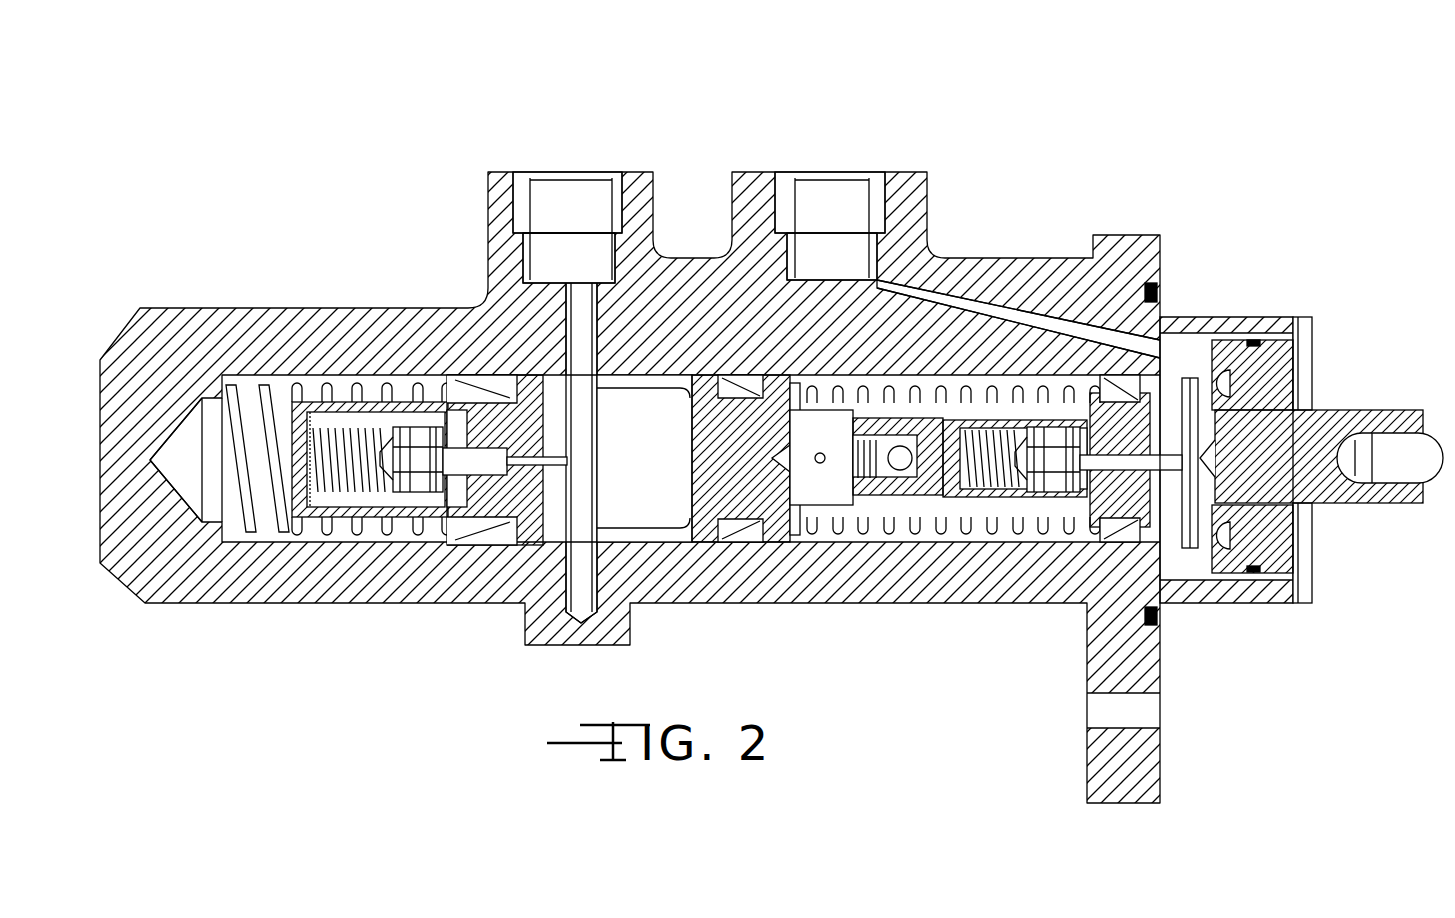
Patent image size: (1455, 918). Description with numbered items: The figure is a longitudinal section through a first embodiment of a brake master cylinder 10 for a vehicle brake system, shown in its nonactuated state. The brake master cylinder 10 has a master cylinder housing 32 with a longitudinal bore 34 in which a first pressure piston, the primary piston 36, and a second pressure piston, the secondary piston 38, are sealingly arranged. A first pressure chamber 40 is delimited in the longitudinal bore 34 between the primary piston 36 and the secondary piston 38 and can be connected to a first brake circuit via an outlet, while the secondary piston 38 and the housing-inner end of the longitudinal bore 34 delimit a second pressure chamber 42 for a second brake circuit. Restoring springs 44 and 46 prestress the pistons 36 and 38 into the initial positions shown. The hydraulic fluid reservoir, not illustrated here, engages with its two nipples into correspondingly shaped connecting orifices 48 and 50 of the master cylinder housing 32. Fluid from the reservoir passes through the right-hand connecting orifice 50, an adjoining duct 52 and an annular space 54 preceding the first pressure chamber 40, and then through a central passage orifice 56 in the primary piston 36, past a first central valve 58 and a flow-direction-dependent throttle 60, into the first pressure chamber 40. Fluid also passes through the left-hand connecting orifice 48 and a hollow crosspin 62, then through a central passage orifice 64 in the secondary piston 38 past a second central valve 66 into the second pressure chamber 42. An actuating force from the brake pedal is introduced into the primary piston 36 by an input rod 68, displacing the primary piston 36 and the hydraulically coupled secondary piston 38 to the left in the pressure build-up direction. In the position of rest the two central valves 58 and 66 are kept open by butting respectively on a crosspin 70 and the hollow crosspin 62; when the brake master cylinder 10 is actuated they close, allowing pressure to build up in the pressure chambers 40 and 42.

The brake master cylinder 10 is at (1052, 112).
The master cylinder housing 32 is at (690, 285).
The longitudinal bore 34 is at (178, 482).
The primary piston 36 is at (1113, 498).
The secondary piston 38 is at (707, 518).
The first pressure chamber 40 is at (888, 518).
The second pressure chamber 42 is at (263, 514).
The restoring spring 44 is at (888, 523).
The restoring spring 46 is at (325, 546).
The connecting orifice 48 is at (580, 166).
The connecting orifice 50 is at (823, 166).
The duct 52 is at (977, 296).
The annular space 54 is at (1170, 524).
The central passage orifice 56 is at (1145, 443).
The first central valve 58 is at (1030, 498).
The throttle 60 is at (878, 386).
The hollow crosspin 62 is at (583, 594).
The central passage orifice 64 is at (470, 448).
The second central valve 66 is at (417, 503).
The input rod 68 is at (1397, 484).
The crosspin 70 is at (1283, 420).